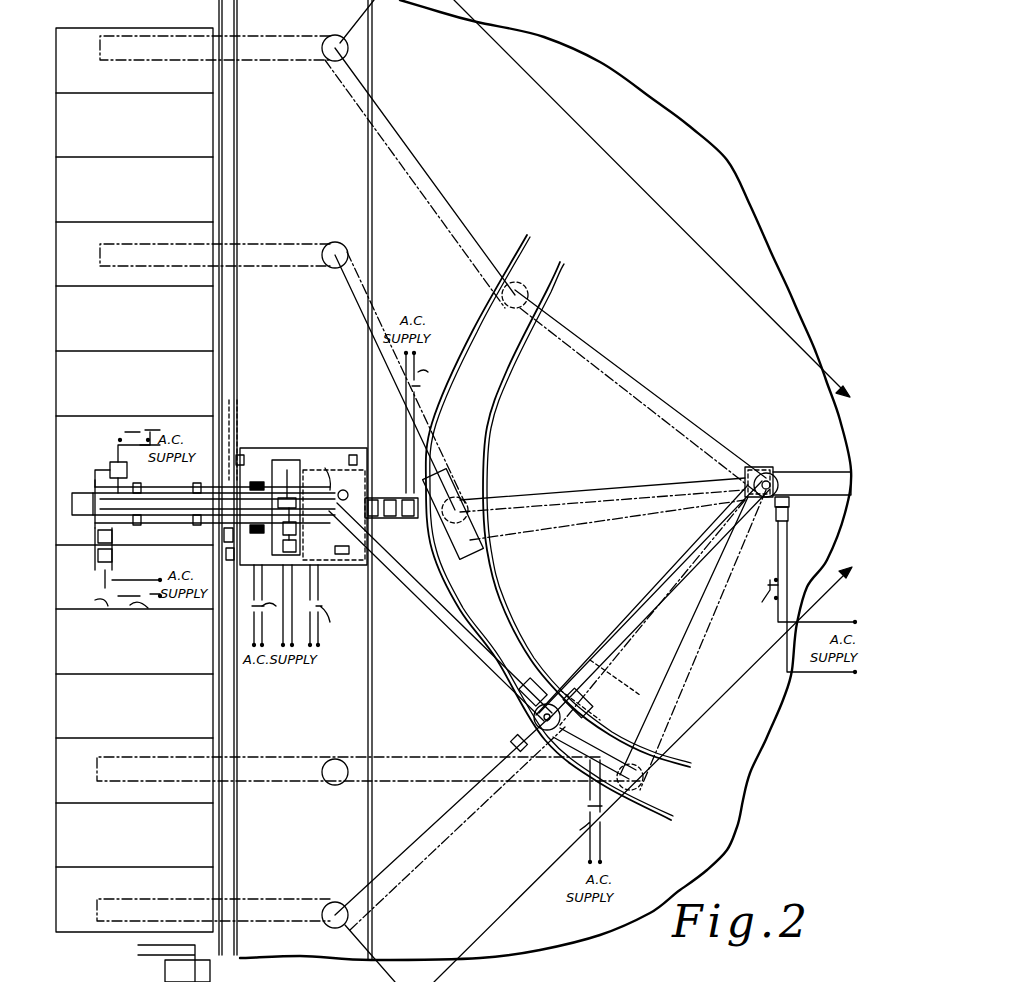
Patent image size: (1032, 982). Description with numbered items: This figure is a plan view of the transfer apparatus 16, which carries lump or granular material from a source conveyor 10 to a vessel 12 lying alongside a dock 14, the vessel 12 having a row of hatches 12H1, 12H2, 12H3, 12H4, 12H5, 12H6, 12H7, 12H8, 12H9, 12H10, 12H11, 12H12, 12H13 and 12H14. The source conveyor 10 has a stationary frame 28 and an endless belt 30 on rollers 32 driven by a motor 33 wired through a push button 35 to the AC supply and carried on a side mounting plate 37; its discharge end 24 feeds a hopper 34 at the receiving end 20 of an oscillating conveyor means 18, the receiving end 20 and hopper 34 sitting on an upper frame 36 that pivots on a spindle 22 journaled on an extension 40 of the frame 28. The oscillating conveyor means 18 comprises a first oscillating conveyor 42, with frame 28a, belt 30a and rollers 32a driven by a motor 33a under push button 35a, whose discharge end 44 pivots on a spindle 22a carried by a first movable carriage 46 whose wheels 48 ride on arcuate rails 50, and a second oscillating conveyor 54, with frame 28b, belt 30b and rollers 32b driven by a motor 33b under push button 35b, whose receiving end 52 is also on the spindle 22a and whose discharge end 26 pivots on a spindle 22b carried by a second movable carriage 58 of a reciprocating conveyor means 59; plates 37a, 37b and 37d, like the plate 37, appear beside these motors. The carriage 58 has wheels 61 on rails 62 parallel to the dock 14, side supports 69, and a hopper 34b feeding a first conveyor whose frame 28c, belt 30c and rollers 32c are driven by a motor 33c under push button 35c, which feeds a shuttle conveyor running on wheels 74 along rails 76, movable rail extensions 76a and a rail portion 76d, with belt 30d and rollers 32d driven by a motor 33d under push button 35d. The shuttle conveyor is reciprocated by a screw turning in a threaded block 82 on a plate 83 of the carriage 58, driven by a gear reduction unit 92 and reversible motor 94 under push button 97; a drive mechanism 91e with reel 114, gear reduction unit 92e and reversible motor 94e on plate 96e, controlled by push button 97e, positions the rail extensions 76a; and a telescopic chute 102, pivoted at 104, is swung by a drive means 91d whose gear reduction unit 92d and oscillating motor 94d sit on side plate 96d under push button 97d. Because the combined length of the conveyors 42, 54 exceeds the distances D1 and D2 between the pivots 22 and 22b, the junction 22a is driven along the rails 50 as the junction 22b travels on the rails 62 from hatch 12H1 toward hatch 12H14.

The source conveyor 10 is at (838, 450).
The vessel 12 is at (87, 938).
The dock 14 is at (316, 817).
The apparatus 16 is at (456, 648).
The oscillating conveyor means 18 is at (652, 583).
The receiving end 20 is at (758, 457).
The pivot or spindle 22 is at (770, 460).
The discharge end 24 is at (790, 468).
The discharge end 26 is at (348, 480).
The stationary frame 28 is at (834, 475).
The endless belt 30 is at (832, 488).
The rollers 32 is at (788, 500).
The motor 33 is at (790, 522).
The hopper 34 is at (740, 480).
The push button 35 is at (768, 592).
The upper frame 36 is at (532, 730).
The side mounting plate 37 is at (770, 522).
The extension 40 is at (742, 455).
The first oscillating conveyor 42 is at (705, 540).
The discharge end 44 is at (575, 665).
The first movable carriage 46 is at (520, 720).
The wheels 48 is at (565, 665).
The arcuate rails 50 is at (482, 418).
The receiving end 52 is at (526, 688).
The second oscillating conveyor 54 is at (427, 606).
The second movable carriage 58 is at (325, 580).
The reciprocating conveyor means 59 is at (304, 446).
The wheels 61 is at (248, 455).
The rails 62 is at (237, 200).
The side supports 69 is at (257, 482).
The wheels 74 is at (195, 483).
The rails 76 is at (318, 469).
The threaded block 82 is at (382, 498).
The plate 83 is at (388, 518).
The gear reduction unit 92 is at (392, 498).
The reversible motor 94 is at (428, 494).
The push button 97 is at (430, 376).
The telescopic chute 102 is at (72, 506).
The pivot 104 is at (98, 526).
The reel 114 is at (286, 507).
The hatch 12H1 is at (151, 85).
The hydraulic line 2 12H2 is at (151, 138).
The hydraulic line 3 12H3 is at (151, 202).
The hydraulic line 4 12H4 is at (97, 275).
The hydraulic line 5 12H5 is at (151, 331).
The hydraulic line 6 12H6 is at (151, 381).
The hydraulic line 7 12H7 is at (102, 437).
The hydraulic line 8 12H8 is at (70, 486).
The hydraulic line 9 12H9 is at (108, 612).
The hydraulic line 10 12H10 is at (158, 665).
The hydraulic line 11 12H11 is at (152, 717).
The hatch 12H12 is at (95, 792).
The hydraulic line 13 12H13 is at (155, 846).
The hatch 12H14 is at (155, 889).
The pivot or spindle 22a is at (520, 282).
The spindle 22b is at (333, 36).
The frame 28a is at (680, 572).
The frame 28b is at (492, 604).
The frame 28c is at (276, 483).
The endless belt 30a is at (640, 620).
The endless belt 30b is at (418, 592).
The endless conveyor belt 30c is at (260, 511).
The endless belt 30d is at (198, 511).
The rollers 32a is at (592, 660).
The rollers 32b is at (350, 554).
The rollers 32c is at (232, 400).
The rollers 32d is at (118, 504).
The motor 33a is at (540, 740).
The motor 33b is at (322, 566).
The motor 33c is at (222, 542).
The motor 33d is at (116, 462).
The hopper 34b is at (336, 492).
The push button 35a is at (586, 814).
The push button 35b is at (326, 624).
The push button 35c is at (258, 606).
The push button 35d is at (134, 437).
The solenoid 37a is at (594, 710).
The solenoid 37b is at (326, 558).
The solenoid 37d is at (108, 470).
The movable rail extensions 76a is at (133, 526).
The stop 76d is at (140, 483).
The drive means 91d is at (92, 540).
The drive mechanism 91e is at (297, 606).
The gear reduction unit 92d is at (98, 550).
The gear reduction unit 92e is at (282, 552).
The oscillating motor 94d is at (104, 570).
The reversible motor 94e is at (265, 606).
The side plate 96d is at (106, 570).
The plate 96e is at (304, 460).
The push button 97d is at (125, 613).
The push button 97e is at (262, 626).
The straight line distance D1 is at (652, 198).
The distance D2 is at (643, 774).